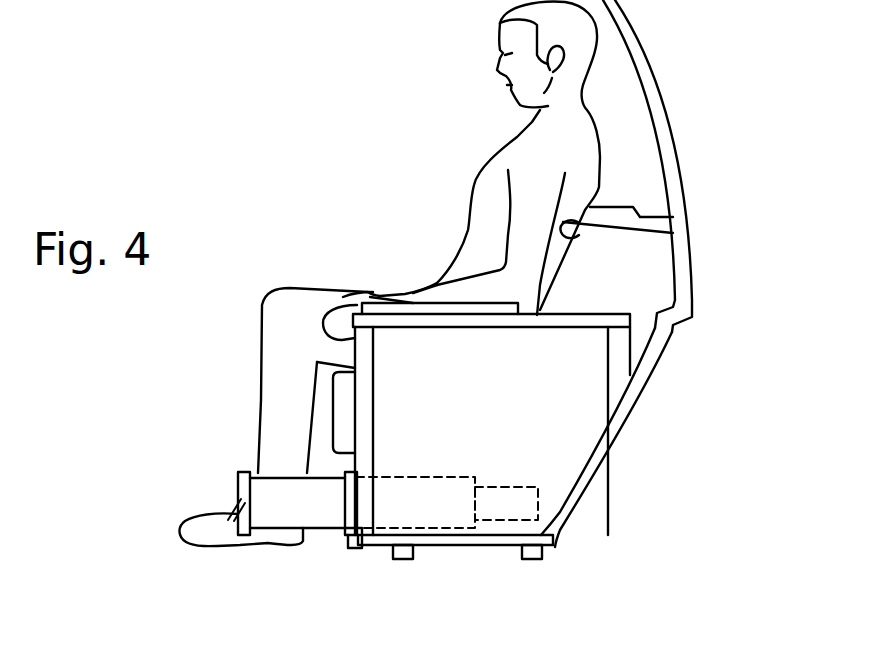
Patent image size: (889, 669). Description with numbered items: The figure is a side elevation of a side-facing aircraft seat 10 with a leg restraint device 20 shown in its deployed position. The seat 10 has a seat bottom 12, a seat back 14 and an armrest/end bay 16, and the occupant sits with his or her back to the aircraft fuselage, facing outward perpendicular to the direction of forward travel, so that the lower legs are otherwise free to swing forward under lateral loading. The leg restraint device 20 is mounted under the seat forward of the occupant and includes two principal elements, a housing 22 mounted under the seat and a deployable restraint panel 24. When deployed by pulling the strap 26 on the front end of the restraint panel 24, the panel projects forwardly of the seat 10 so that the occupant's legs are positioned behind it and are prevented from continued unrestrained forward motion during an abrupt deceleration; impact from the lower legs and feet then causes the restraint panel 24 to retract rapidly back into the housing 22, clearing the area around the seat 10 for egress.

The seat 10 is at (636, 145).
The seat bottom 12 is at (347, 410).
The seat back 14 is at (673, 233).
The armrest/end bay 16 is at (577, 419).
The leg restraint device 20 is at (342, 555).
The housing 22 is at (457, 500).
The restraint panel 24 is at (238, 517).
The strap 26 is at (237, 502).